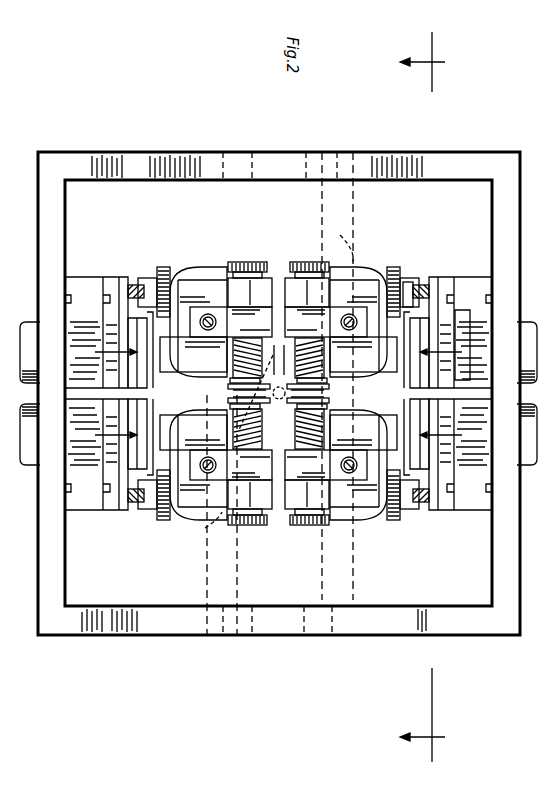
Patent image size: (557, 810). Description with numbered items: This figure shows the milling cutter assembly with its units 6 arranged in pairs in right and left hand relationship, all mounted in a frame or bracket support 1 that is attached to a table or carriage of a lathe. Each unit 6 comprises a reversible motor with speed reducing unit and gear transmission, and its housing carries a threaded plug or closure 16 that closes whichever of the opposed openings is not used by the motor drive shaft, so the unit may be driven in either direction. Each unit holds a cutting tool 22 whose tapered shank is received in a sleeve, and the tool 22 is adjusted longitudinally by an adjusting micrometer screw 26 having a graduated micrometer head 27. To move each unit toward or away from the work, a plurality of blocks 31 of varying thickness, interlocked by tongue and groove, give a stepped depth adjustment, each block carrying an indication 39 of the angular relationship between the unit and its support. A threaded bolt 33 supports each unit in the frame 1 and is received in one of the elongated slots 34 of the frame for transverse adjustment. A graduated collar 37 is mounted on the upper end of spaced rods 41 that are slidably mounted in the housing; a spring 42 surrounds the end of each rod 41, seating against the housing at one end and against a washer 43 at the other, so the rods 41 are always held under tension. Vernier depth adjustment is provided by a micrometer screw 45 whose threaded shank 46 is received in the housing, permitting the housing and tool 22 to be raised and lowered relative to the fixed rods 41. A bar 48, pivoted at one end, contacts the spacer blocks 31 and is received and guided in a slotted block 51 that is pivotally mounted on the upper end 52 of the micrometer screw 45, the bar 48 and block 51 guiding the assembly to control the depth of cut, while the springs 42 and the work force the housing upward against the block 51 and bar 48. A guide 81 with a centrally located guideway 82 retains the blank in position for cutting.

The frame or bracket support 1 is at (358, 640).
The units 6 is at (435, 397).
The threaded plug or closure 16 is at (207, 332).
The cutting tool 22 is at (228, 387).
The adjusting micrometer screw 26 is at (295, 258).
The micrometer head 27 is at (241, 257).
The blocks 31 is at (112, 277).
The threaded bolt 33 is at (24, 410).
The elongated slots 34 is at (240, 152).
The collar 37 is at (148, 385).
The indication 39 is at (440, 352).
The spaced rods 41 is at (277, 392).
The spring 42 is at (281, 394).
The washer 43 is at (262, 386).
The micrometer screw 45 is at (163, 267).
The shank 46 is at (175, 275).
The bar 48 is at (133, 285).
The block 51 is at (147, 278).
The upper end 52 is at (406, 282).
The guide 81 is at (353, 240).
The guideway 82 is at (279, 400).